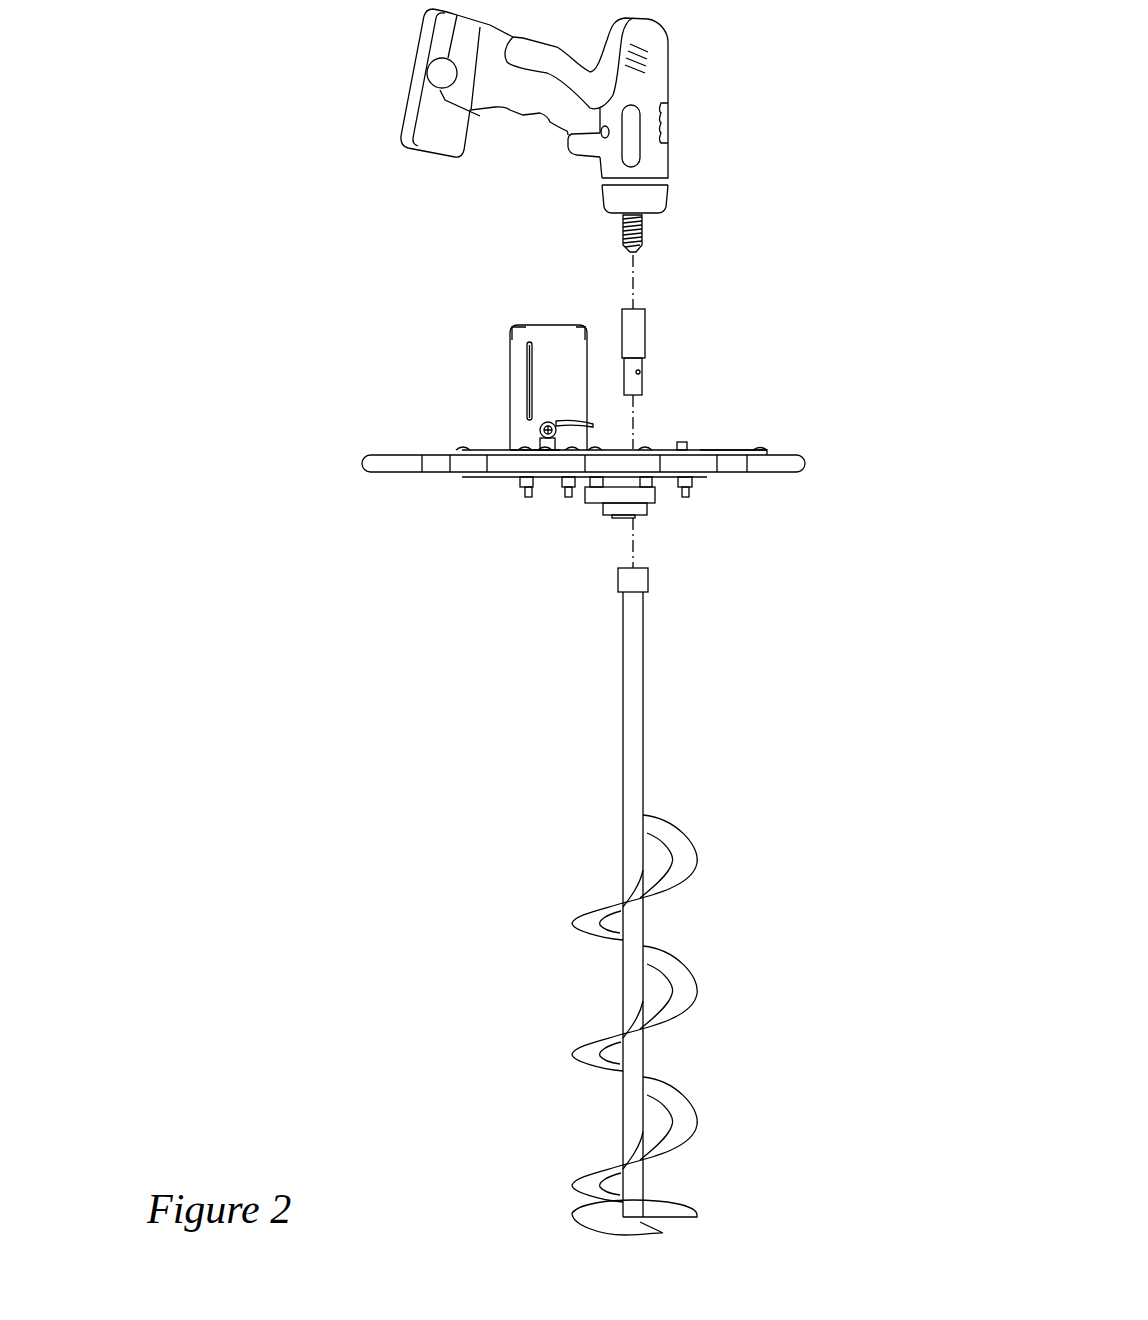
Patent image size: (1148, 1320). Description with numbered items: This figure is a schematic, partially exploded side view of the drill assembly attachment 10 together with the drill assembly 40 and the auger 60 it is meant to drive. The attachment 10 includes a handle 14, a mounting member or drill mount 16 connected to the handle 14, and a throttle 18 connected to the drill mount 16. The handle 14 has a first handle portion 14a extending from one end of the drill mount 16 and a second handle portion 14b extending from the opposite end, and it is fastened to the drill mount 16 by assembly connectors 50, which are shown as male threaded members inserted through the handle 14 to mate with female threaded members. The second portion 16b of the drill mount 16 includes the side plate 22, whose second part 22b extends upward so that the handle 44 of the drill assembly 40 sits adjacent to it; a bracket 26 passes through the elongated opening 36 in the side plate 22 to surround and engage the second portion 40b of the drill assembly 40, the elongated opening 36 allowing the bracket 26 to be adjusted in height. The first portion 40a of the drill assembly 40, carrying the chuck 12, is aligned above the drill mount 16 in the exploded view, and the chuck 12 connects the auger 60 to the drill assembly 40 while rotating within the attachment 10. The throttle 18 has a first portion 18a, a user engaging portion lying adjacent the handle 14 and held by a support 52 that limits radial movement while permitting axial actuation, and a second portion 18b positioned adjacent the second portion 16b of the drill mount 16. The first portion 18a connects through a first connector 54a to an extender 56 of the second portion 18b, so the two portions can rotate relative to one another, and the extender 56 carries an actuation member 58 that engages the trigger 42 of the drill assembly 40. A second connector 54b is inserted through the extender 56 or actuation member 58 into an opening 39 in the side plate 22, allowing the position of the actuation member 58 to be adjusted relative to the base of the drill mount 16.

The drill assembly attachment 10 is at (294, 291).
The chuck 12 is at (646, 335).
The handle 14 is at (372, 460).
The first handle portion 14a is at (800, 458).
The second handle portion 14b is at (390, 471).
The drill mount 16 is at (478, 379).
The second portion of the drill mount 16b is at (585, 326).
The throttle 18 is at (631, 423).
The first portion of the throttle 18a is at (740, 447).
The second portion of the throttle 18b is at (568, 416).
The side plate 22 is at (550, 330).
The second part of the side plate 22b is at (525, 330).
The bracket 26 is at (527, 405).
The opening 36 is at (525, 355).
The opening 39 is at (547, 420).
The drill assembly 40 is at (700, 35).
The first portion of the drill 40a is at (676, 208).
The second portion of the drill assembly 40b is at (518, 34).
The trigger 42 is at (583, 147).
The handle 44 is at (537, 115).
The assembly connectors 50 is at (527, 495).
The support 52 is at (684, 447).
The first connector 54a is at (515, 457).
The second connector 54b is at (538, 437).
The extender 56 is at (568, 488).
The actuation member 58 is at (590, 424).
The auger 60 is at (680, 840).